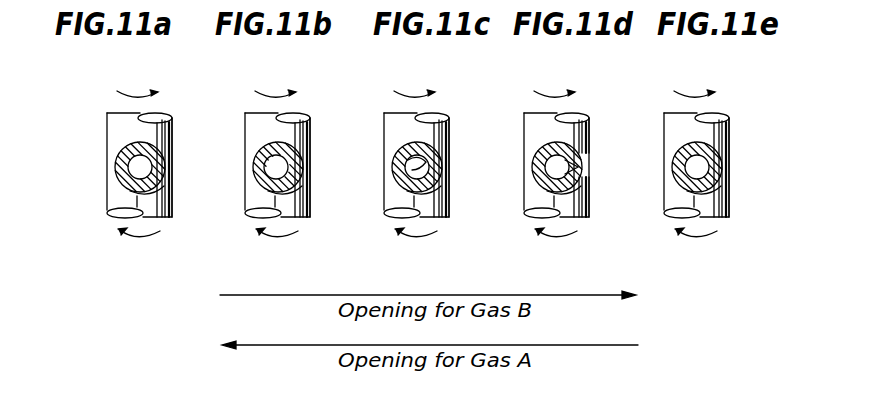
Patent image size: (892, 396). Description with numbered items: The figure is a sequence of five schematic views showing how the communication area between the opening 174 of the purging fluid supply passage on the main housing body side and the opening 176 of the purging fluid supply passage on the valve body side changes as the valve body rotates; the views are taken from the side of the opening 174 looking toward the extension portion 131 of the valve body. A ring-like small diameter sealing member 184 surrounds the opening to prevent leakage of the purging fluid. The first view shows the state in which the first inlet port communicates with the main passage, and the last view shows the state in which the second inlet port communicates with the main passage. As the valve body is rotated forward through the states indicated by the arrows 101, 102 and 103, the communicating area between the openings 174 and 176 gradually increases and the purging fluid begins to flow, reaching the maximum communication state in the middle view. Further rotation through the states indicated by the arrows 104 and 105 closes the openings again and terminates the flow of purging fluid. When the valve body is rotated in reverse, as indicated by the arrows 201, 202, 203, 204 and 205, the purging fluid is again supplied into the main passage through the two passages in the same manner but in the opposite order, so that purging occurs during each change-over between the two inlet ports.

In FIG. 11a, the arrow 101 is at (138, 96).
In FIG. 11b, the arrow 102 is at (277, 96).
In FIG. 11c, the arrow 103 is at (417, 96).
In FIG. 11d, the arrow 104 is at (557, 96).
In FIG. 11e, the arrow 105 is at (694, 96).
In FIG. 11a, the extension portion 131 is at (171, 129).
In FIG. 11b, the extension portion 131 is at (310, 129).
In FIG. 11c, the extension portion 131 is at (453, 129).
In FIG. 11d, the extension portion 131 is at (591, 129).
In FIG. 11e, the extension portion 131 is at (730, 129).
In FIG. 11a, the opening 174 is at (134, 170).
In FIG. 11b, the opening 174 is at (270, 170).
In FIG. 11c, the opening 174 is at (410, 172).
In FIG. 11d, the opening 174 is at (533, 162).
In FIG. 11e, the opening 174 is at (690, 170).
In FIG. 11a, the opening 176 is at (115, 161).
In FIG. 11b, the opening 176 is at (253, 161).
In FIG. 11c, the opening 176 is at (399, 158).
In FIG. 11d, the opening 176 is at (591, 162).
In FIG. 11e, the opening 176 is at (722, 165).
In FIG. 11a, the ring-like small diameter sealing member 184 is at (169, 198).
In FIG. 11b, the ring-like small diameter sealing member 184 is at (307, 198).
In FIG. 11c, the ring-like small diameter sealing member 184 is at (446, 198).
In FIG. 11d, the ring-like small diameter sealing member 184 is at (587, 198).
In FIG. 11e, the ring-like small diameter sealing member 184 is at (728, 192).
In FIG. 11e, the arrow 201 is at (705, 238).
In FIG. 11d, the arrow 202 is at (565, 238).
In FIG. 11c, the arrow 203 is at (425, 238).
In FIG. 11b, the arrow 204 is at (285, 238).
In FIG. 11a, the arrow 205 is at (147, 238).